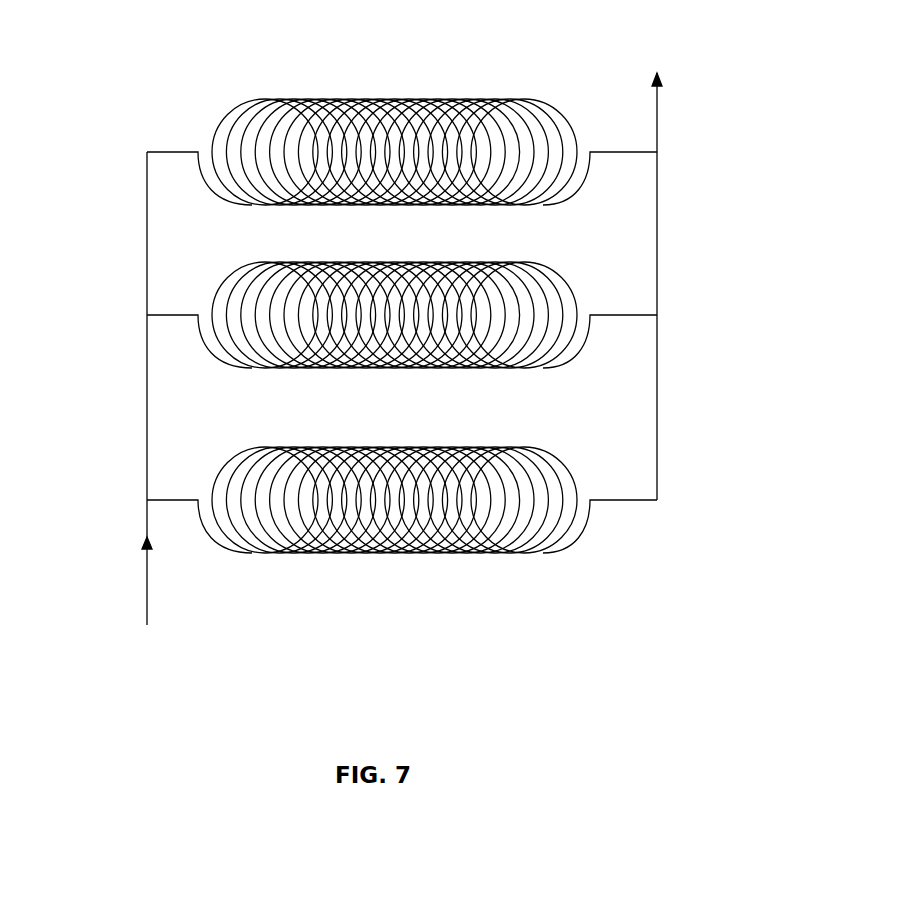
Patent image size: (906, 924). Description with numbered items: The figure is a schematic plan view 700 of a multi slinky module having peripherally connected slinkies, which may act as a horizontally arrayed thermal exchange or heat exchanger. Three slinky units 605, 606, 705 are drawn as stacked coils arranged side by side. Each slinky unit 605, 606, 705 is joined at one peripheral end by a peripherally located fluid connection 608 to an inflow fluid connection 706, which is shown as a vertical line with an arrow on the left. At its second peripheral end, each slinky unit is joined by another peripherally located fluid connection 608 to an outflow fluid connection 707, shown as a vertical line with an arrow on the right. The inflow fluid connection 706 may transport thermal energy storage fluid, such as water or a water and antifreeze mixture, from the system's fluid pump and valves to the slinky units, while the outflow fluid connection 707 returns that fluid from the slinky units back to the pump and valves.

The schematic plan view 700 is at (410, 359).
The slinky unit 605 is at (288, 99).
The slinky unit 606 is at (245, 263).
The slinky unit 705 is at (255, 448).
The peripherally located fluid connection 608 is at (198, 152).
The inflow fluid connection 706 is at (143, 567).
The outflow fluid connection 707 is at (657, 112).